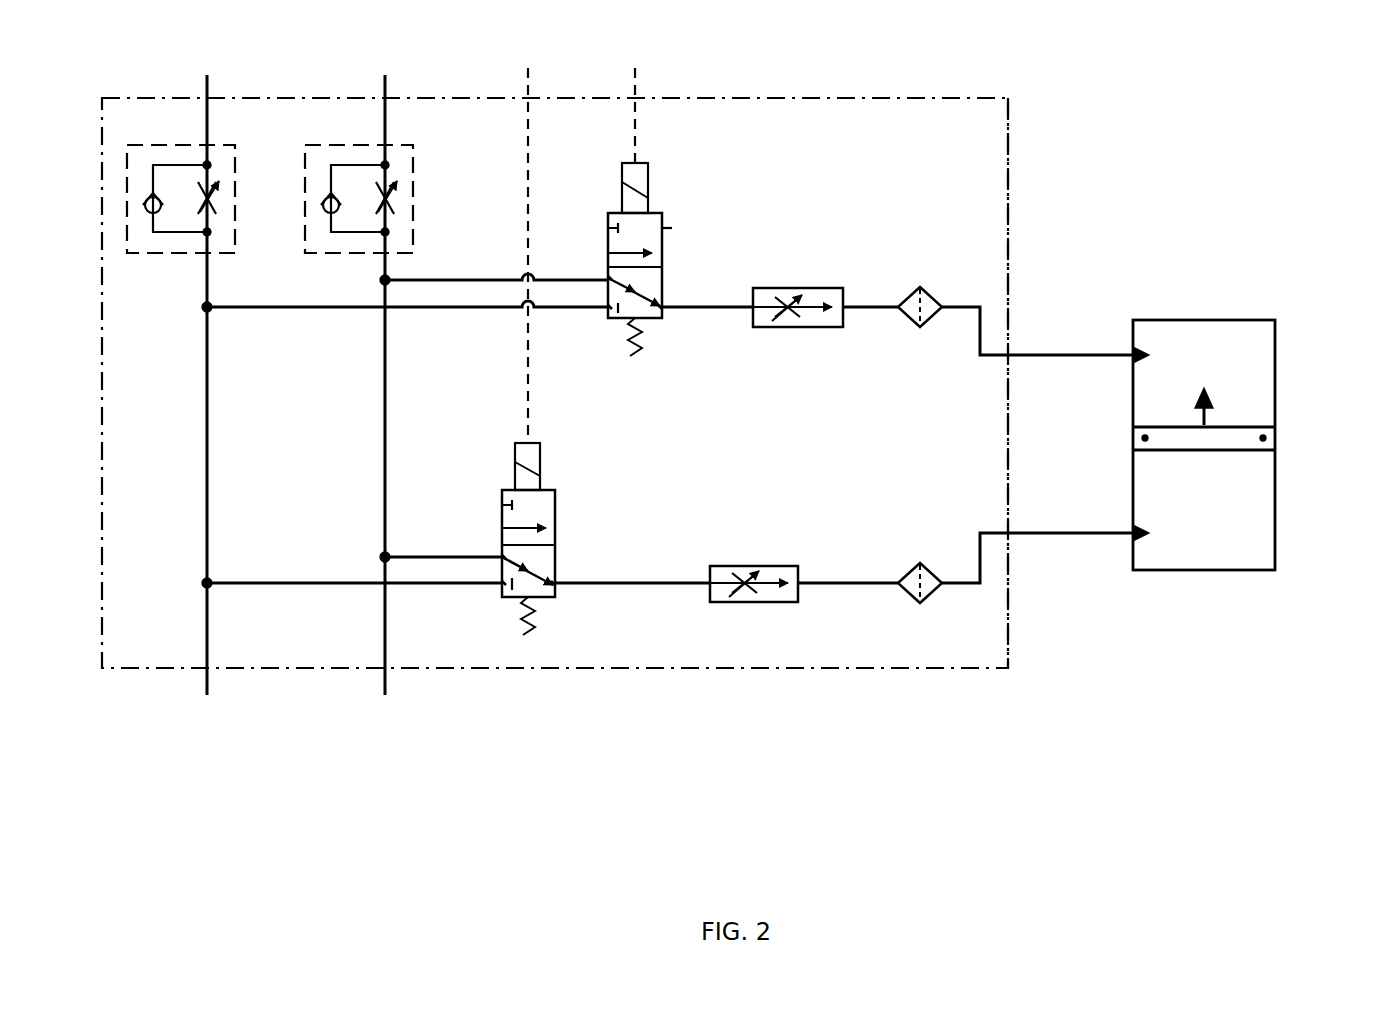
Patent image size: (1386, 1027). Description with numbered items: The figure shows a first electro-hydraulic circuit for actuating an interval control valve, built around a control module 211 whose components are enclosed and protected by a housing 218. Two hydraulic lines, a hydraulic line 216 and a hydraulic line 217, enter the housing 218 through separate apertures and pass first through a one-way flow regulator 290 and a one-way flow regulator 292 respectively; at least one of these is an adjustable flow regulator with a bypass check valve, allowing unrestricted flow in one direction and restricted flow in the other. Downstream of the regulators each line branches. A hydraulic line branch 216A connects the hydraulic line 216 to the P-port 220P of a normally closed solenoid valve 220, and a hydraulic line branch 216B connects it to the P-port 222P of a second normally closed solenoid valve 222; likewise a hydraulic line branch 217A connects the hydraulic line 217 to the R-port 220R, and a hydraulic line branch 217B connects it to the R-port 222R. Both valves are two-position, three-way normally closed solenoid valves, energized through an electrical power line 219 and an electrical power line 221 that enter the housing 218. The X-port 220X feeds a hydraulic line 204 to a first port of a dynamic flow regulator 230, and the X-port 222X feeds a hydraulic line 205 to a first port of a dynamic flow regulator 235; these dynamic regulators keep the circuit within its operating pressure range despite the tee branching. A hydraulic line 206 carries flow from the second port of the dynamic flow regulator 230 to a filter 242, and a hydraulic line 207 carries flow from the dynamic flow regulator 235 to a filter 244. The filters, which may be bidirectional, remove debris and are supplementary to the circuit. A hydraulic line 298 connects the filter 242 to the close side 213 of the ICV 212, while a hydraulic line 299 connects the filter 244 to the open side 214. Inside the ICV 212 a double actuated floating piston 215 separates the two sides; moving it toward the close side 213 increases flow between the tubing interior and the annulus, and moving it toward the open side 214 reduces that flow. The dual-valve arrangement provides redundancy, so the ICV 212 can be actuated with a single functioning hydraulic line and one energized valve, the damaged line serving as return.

The control module 211 is at (911, 95).
The housing 218 is at (1010, 152).
The hydraulic line 216 is at (207, 633).
The hydraulic line 217 is at (385, 633).
The one-way flow regulator 290 is at (167, 145).
The one-way flow regulator 292 is at (416, 167).
The electrical power line 219 is at (640, 125).
The electrical power line 221 is at (526, 333).
The hydraulic line branch 216A is at (308, 313).
The hydraulic line branch 217A is at (478, 277).
The hydraulic line branch 216B is at (298, 580).
The hydraulic line branch 217B is at (433, 557).
The normally closed solenoid valve 220 is at (637, 279).
The R-port 220R is at (603, 277).
The P-port 220P is at (603, 315).
The X-port 220X is at (667, 312).
The normally closed solenoid valve 222 is at (530, 548).
The R-port 222R is at (497, 552).
The P-port 222P is at (496, 591).
The X-port 222X is at (562, 589).
The hydraulic line 204 is at (718, 302).
The hydraulic line 205 is at (640, 580).
The dynamic flow regulator 230 is at (805, 288).
The dynamic flow regulator 235 is at (757, 565).
The hydraulic line 206 is at (873, 312).
The hydraulic line 207 is at (848, 580).
The filter 242 is at (927, 295).
The filter 244 is at (928, 571).
The hydraulic line 298 is at (1058, 355).
The hydraulic line 299 is at (1067, 537).
The ICV 212 is at (1247, 412).
The close side 213 is at (1204, 374).
The open side 214 is at (1204, 510).
The double actuated floating piston 215 is at (1221, 439).